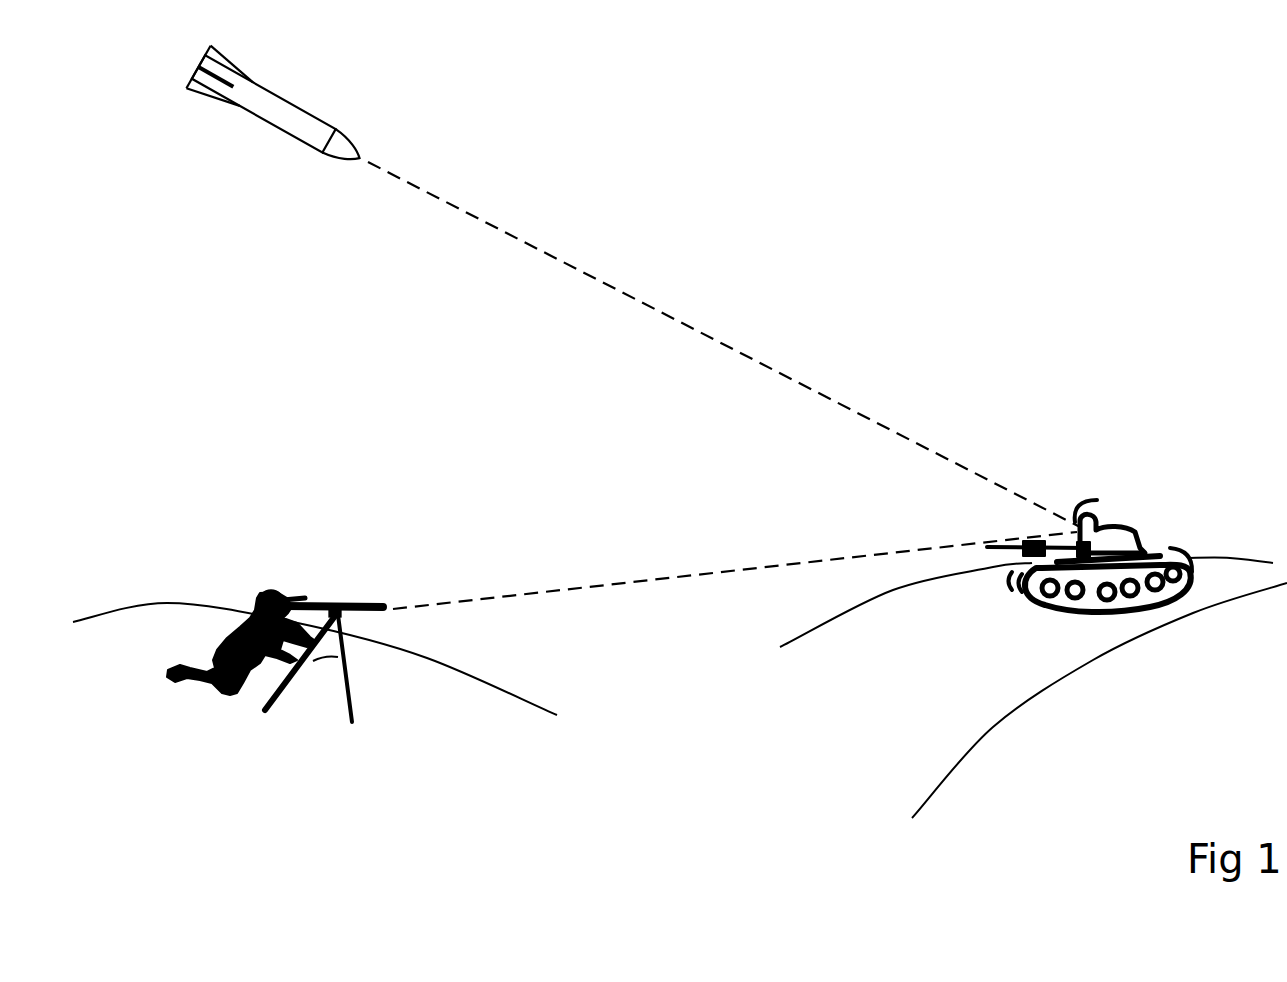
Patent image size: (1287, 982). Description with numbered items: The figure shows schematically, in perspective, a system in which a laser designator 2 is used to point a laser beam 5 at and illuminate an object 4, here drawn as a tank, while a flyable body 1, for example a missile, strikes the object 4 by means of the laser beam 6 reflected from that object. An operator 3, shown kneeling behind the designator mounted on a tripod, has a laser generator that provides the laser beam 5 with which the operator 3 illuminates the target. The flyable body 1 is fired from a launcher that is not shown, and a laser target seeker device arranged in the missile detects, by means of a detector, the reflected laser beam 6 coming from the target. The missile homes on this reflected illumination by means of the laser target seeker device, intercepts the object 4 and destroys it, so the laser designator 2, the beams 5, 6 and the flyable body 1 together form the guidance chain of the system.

The flyable body 1 is at (253, 118).
The laser designator 2 is at (345, 600).
The operator 3 is at (222, 693).
The object 4 is at (1133, 523).
The laser beam 5 is at (703, 573).
The reflected laser beam 6 is at (780, 378).